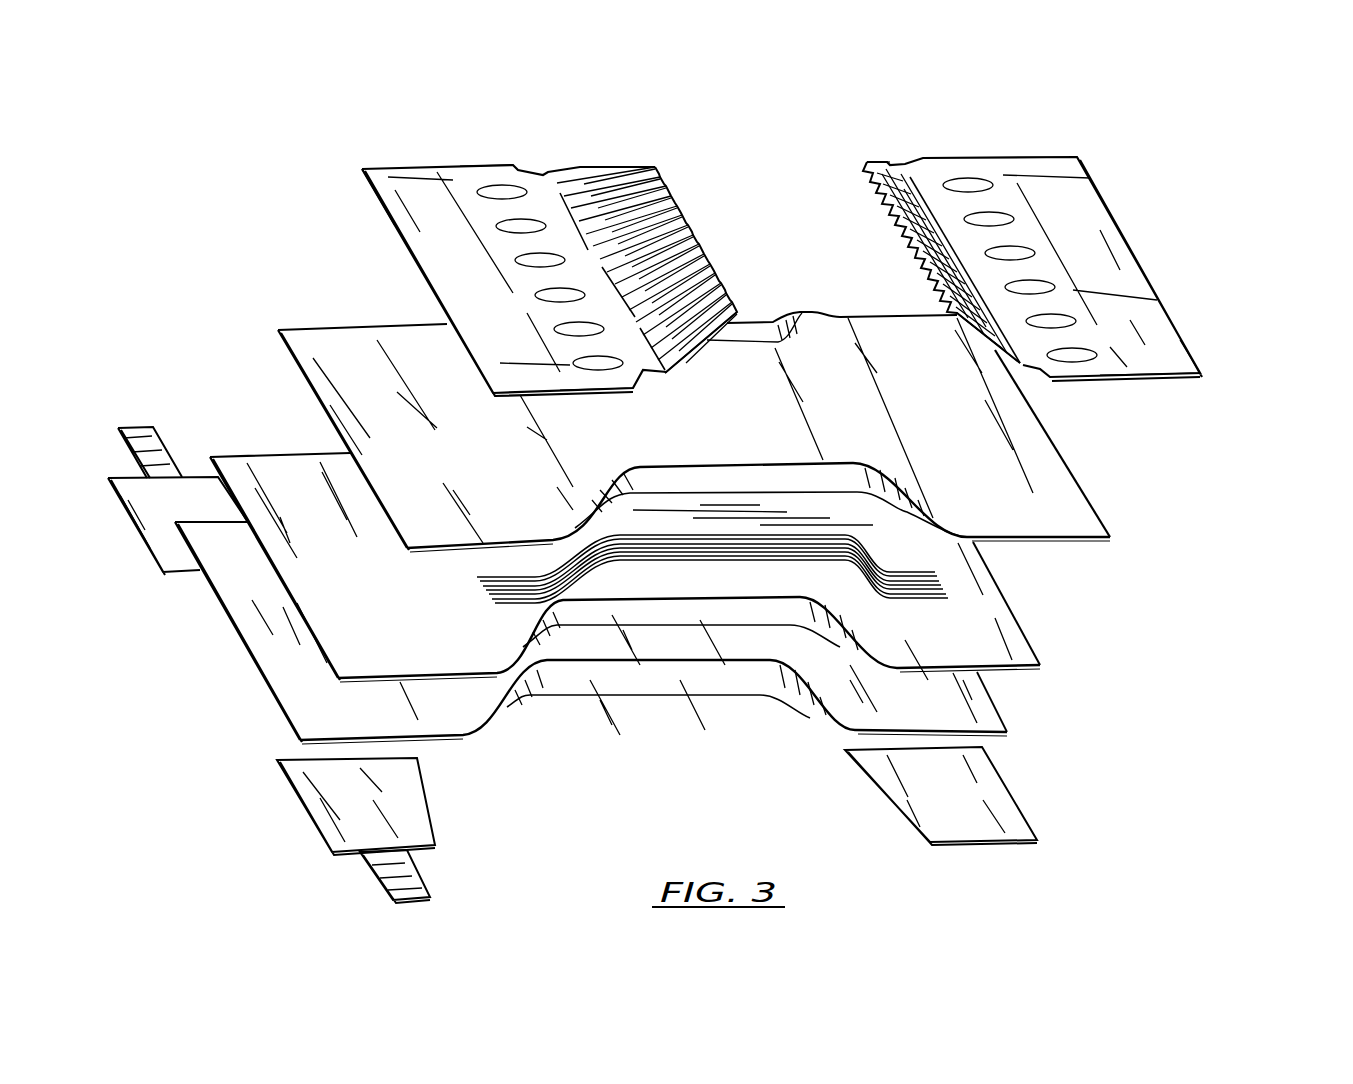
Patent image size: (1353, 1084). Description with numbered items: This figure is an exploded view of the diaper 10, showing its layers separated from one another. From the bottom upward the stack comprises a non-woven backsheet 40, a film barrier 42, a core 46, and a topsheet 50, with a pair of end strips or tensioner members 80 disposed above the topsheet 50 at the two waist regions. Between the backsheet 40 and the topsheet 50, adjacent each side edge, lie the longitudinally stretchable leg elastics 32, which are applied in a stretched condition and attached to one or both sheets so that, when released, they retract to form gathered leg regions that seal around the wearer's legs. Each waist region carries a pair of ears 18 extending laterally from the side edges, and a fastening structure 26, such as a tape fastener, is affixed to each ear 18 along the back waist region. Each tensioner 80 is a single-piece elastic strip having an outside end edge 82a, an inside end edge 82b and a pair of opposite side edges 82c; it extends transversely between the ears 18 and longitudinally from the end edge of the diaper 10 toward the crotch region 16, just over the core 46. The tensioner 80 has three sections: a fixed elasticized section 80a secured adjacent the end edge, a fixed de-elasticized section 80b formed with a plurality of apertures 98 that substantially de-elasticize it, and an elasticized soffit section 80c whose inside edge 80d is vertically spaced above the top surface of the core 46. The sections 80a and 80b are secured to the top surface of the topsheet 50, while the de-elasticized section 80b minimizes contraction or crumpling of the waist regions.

The diaper 10 is at (1139, 124).
The crotch region 16 is at (627, 702).
The ears 18 is at (162, 533).
The fastening structure 26 is at (160, 432).
The leg elastics 32 is at (947, 603).
The non-woven backsheet 40 is at (1000, 722).
The film barrier 42 is at (1025, 650).
The core 46 is at (933, 563).
The topsheet 50 is at (1070, 495).
The tensioner member 80 is at (783, 259).
The fixed elasticized section 80a is at (427, 197).
The fixed de-elasticized section 80b is at (811, 228).
The elasticized soffit section 80c is at (700, 232).
The inside edge of the soffit section 80d is at (980, 330).
The outside end edge 82a is at (390, 227).
The inside end edge 82b is at (657, 185).
The side edges 82c is at (1197, 403).
The apertures 98 is at (527, 258).